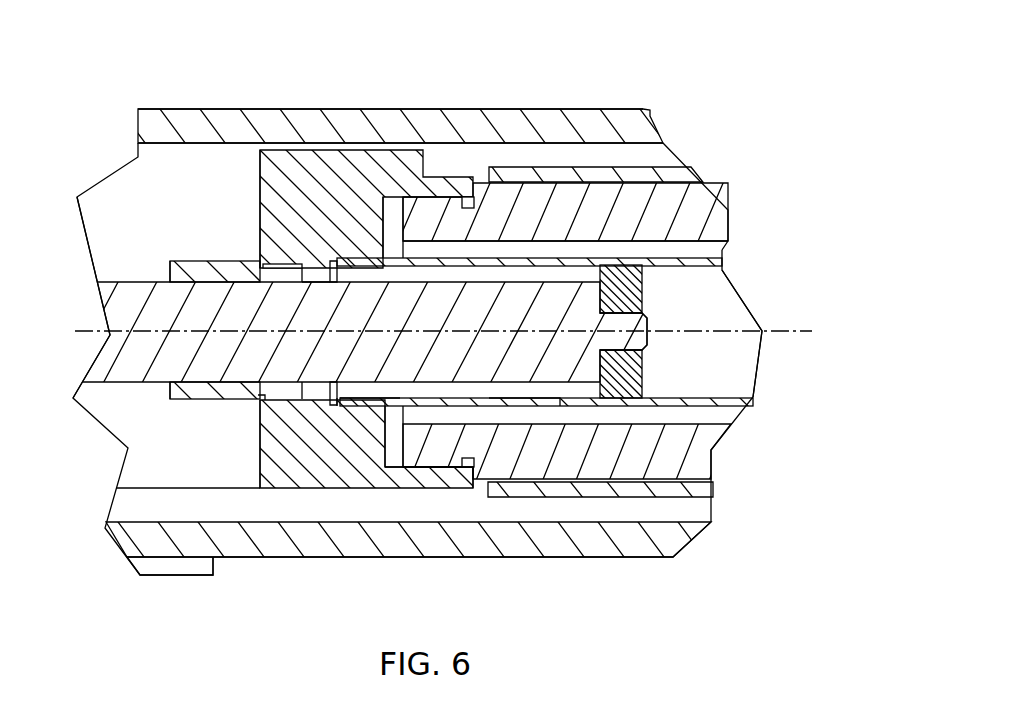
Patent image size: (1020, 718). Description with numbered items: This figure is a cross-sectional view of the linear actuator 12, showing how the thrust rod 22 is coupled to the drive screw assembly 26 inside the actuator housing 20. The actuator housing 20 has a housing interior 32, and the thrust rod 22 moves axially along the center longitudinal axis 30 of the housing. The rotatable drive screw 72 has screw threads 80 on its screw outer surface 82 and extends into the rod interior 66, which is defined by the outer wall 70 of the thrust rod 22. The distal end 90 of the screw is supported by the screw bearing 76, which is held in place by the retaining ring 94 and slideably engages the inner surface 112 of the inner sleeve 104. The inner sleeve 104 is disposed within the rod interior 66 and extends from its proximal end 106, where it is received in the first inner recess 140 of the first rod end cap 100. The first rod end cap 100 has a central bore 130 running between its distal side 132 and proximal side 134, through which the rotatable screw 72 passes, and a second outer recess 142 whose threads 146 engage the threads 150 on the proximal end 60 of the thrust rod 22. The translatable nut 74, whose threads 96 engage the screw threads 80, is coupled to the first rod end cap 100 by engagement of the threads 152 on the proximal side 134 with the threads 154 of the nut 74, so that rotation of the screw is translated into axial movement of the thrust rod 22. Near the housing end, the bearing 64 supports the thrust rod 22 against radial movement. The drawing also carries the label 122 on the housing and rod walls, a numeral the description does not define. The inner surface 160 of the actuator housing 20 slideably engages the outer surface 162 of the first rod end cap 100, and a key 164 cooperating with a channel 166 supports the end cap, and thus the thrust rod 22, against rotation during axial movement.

The linear actuator 12 is at (755, 102).
The actuator housing 20 is at (612, 117).
The thrust rod 22 is at (696, 202).
The drive screw assembly 26 is at (252, 417).
The center longitudinal axis 30 is at (800, 331).
The housing interior 32 is at (128, 503).
The proximal end 60 is at (483, 497).
The bearing 64 is at (688, 483).
The rod interior 66 is at (734, 308).
The outer wall 70 is at (714, 215).
The rotatable drive screw 72 is at (147, 307).
The translatable nut 74 is at (220, 273).
The screw bearing 76 is at (620, 382).
The screw threads 80 is at (158, 281).
The screw outer surface 82 is at (100, 282).
The distal end 90 is at (577, 383).
The retaining ring 94 is at (638, 356).
The threads 96 is at (215, 388).
The first rod end cap 100 is at (395, 478).
The inner sleeve 104 is at (527, 403).
The proximal end 106 is at (372, 408).
The inner surface 112 is at (690, 398).
The inner surface 122 is at (527, 154).
The central bore 130 is at (323, 392).
The distal side 132 is at (452, 492).
The proximal side 134 is at (268, 500).
The first inner recess 140 is at (390, 207).
The second outer recess 142 is at (394, 213).
The threads 146 is at (462, 198).
The threads 150 is at (462, 204).
The threads 152 is at (257, 403).
The threads 154 is at (298, 390).
The inner surface 160 is at (172, 528).
The outer surface 162 is at (258, 168).
The key 164 is at (312, 152).
The channel 166 is at (183, 157).